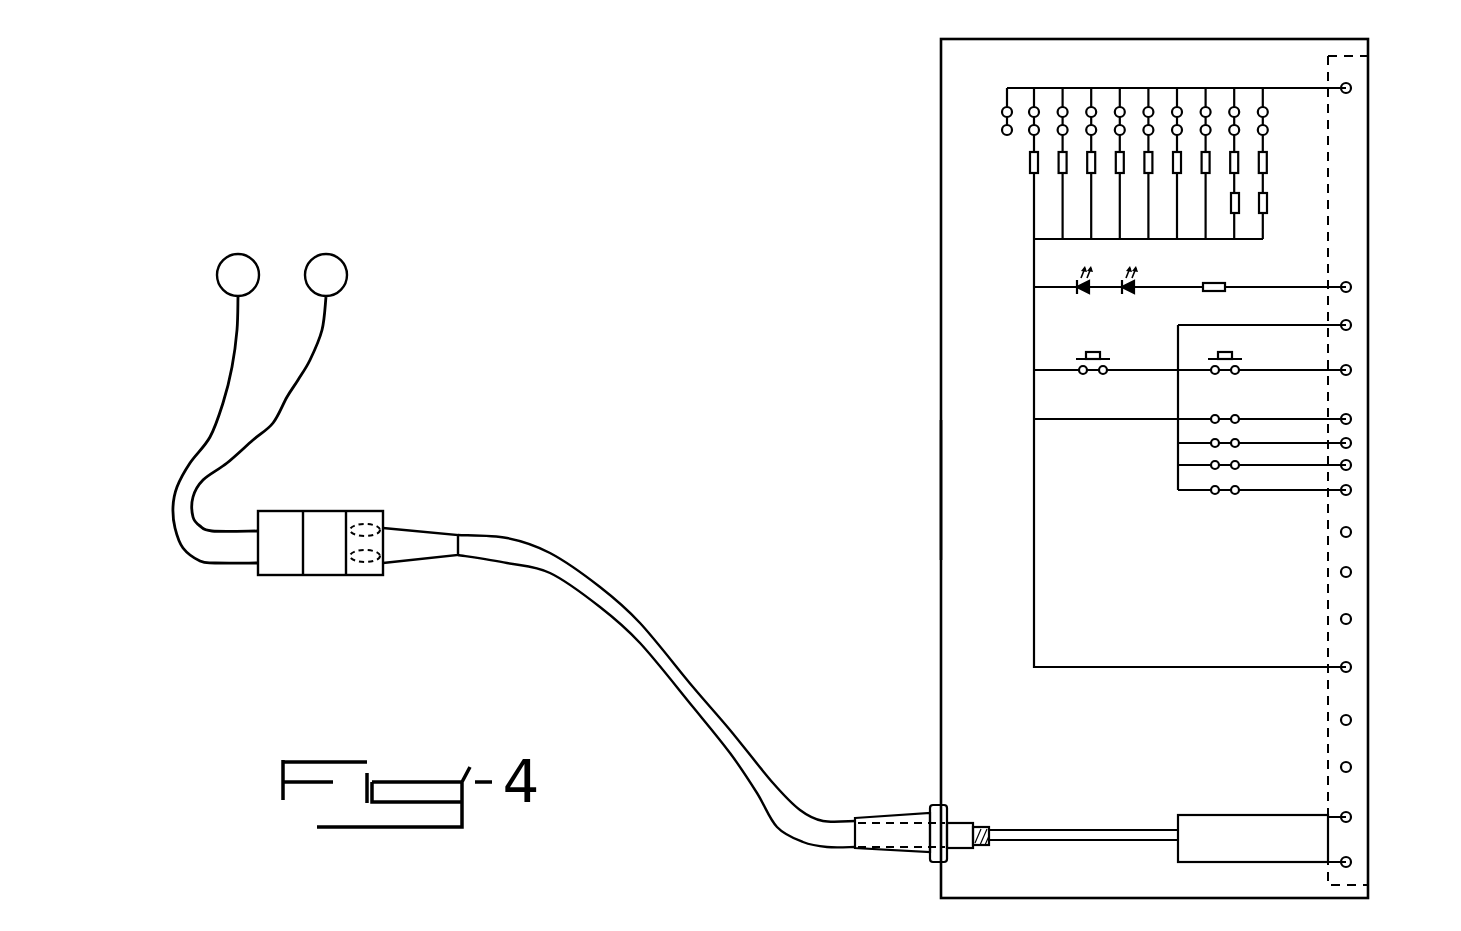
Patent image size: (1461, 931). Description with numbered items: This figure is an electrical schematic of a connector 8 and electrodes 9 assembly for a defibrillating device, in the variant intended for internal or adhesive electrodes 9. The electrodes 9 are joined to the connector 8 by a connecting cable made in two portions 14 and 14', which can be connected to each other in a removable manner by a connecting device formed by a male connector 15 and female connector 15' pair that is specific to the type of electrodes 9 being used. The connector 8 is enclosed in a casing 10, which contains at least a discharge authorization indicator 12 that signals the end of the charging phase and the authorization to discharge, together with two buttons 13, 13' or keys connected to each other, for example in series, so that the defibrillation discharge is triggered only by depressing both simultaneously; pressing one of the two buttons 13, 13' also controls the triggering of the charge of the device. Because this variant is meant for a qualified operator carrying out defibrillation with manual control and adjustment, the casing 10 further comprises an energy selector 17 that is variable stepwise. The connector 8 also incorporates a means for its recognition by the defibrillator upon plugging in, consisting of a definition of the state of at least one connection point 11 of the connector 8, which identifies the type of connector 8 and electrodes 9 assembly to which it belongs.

The connector 8 is at (932, 399).
The electrodes 9 is at (238, 273).
The casing 10 is at (940, 490).
The connection point 11 is at (1352, 421).
The indicator 12 is at (1060, 270).
The button 13 is at (981, 347).
The button 13' is at (1047, 316).
The connecting cable portion 14 is at (619, 506).
The connecting cable portion 14' is at (249, 430).
The male connector 15 is at (388, 370).
The female connector 15' is at (373, 356).
The energy selector 17 is at (980, 167).